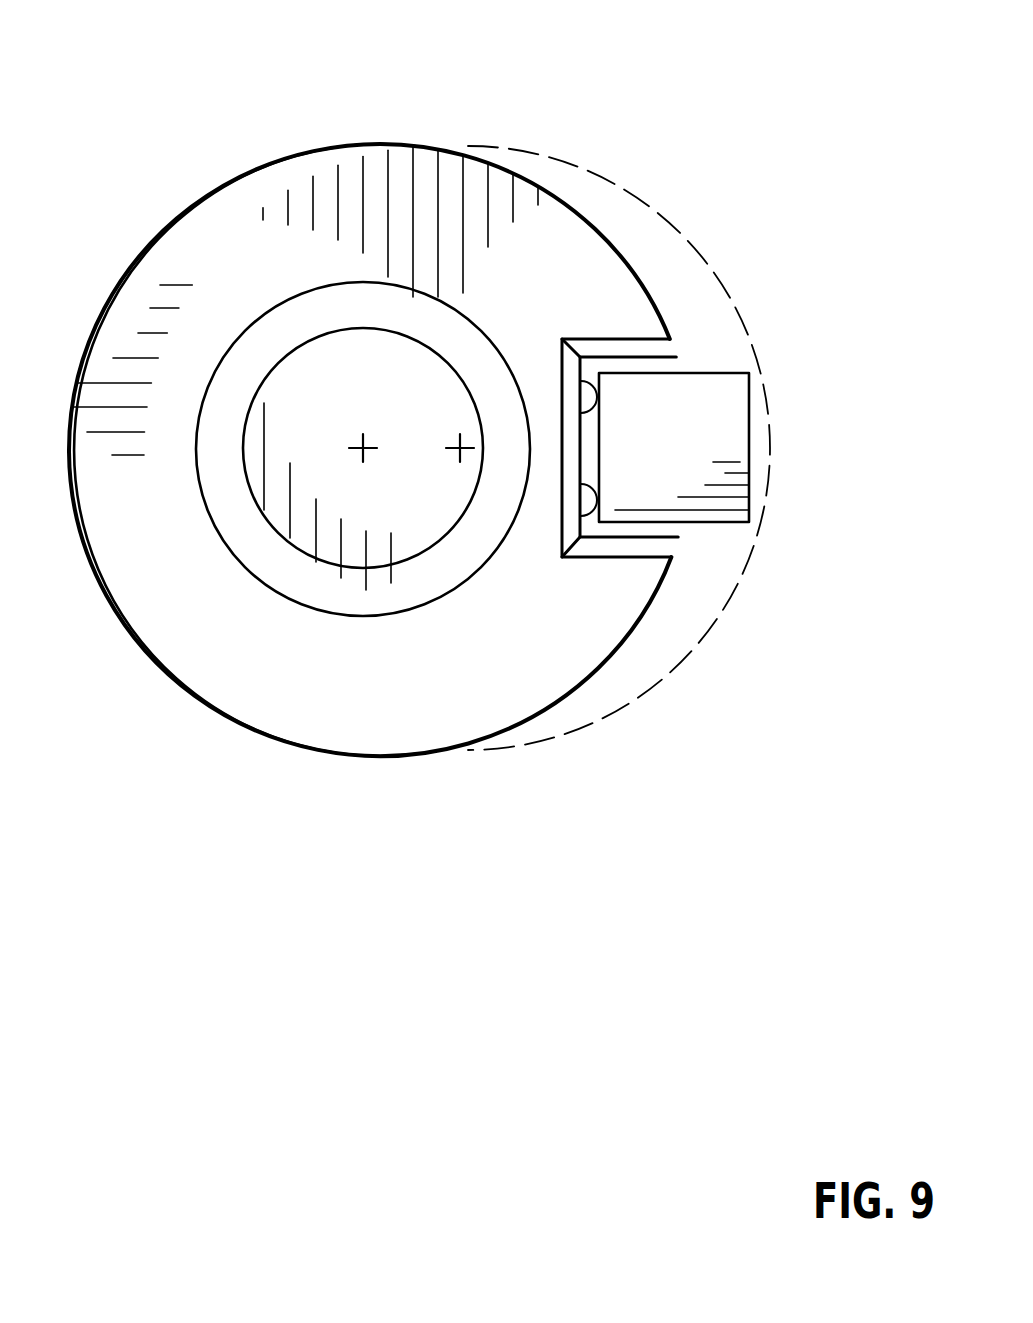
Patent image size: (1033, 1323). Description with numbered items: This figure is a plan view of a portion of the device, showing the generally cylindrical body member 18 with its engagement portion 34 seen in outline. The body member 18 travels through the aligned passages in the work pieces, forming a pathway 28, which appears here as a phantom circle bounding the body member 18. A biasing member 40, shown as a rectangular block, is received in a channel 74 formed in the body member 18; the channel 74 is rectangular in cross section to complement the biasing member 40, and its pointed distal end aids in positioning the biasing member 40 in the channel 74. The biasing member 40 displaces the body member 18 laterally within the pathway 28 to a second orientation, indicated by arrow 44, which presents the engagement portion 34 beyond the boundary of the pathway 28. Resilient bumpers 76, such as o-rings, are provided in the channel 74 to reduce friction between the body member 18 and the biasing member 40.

The body member 18 is at (597, 242).
The pathway 28 is at (692, 279).
The engagement portion 34 is at (230, 188).
The biasing member 40 is at (735, 463).
The arrow 44 is at (147, 708).
The channel 74 is at (640, 363).
The resilient bumpers 76 is at (590, 500).